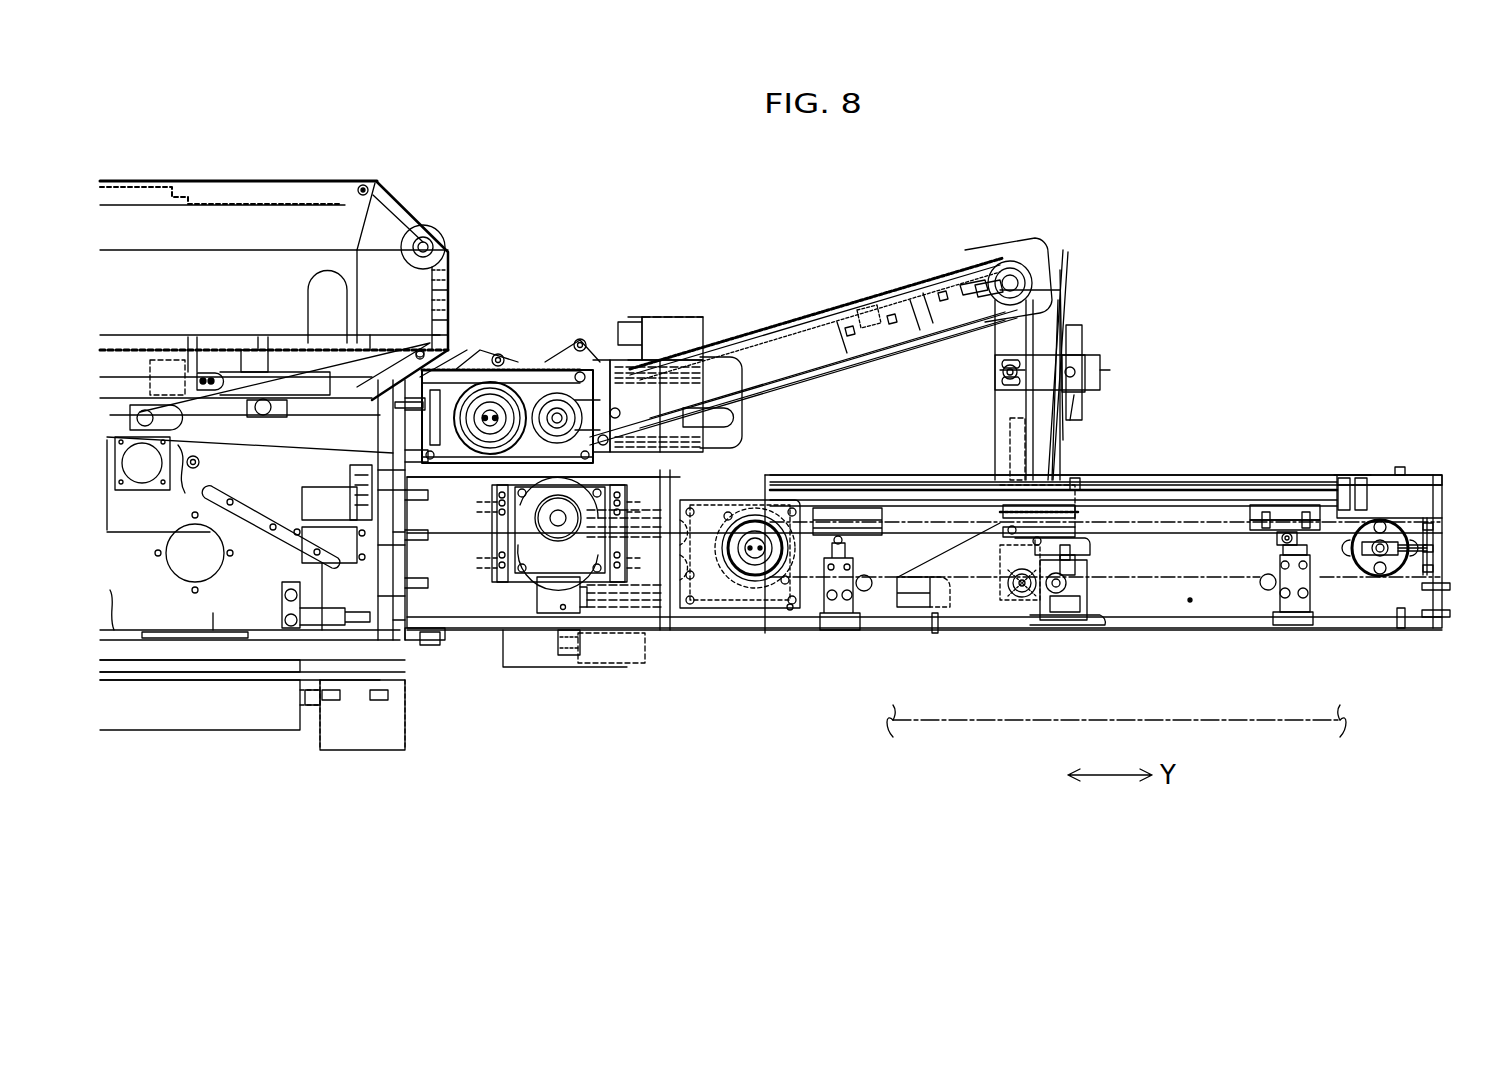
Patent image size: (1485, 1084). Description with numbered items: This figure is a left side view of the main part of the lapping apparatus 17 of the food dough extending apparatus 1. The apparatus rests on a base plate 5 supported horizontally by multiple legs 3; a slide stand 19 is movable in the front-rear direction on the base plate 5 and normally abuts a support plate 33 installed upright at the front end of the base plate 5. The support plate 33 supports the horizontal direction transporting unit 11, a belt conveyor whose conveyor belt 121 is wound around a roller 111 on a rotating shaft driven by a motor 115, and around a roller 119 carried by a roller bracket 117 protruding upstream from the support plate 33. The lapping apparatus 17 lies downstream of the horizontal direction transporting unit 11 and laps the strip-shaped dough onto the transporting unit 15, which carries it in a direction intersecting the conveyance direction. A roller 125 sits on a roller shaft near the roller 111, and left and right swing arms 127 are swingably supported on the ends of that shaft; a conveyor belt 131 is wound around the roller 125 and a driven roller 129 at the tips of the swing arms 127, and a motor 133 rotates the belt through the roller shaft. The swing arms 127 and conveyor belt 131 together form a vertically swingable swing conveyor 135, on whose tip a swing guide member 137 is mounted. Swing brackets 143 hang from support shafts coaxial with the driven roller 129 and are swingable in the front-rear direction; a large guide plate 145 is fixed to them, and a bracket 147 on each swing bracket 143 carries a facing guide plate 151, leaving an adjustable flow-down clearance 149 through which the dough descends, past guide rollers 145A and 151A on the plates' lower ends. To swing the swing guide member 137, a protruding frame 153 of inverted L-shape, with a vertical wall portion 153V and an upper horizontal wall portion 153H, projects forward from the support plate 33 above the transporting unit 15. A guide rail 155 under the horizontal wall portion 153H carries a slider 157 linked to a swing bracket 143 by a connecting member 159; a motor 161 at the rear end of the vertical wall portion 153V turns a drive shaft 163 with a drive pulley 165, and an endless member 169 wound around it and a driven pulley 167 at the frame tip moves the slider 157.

The food dough extending apparatus 1 is at (422, 164).
The legs 3 is at (366, 740).
The base plate 5 is at (268, 696).
The horizontal direction transporting unit 11 is at (262, 462).
The transporting unit 15 is at (1298, 718).
The lapping apparatus 17 is at (825, 316).
The slide stand 19 is at (194, 682).
The support plate 33 is at (412, 655).
The roller 111 is at (478, 352).
The motor 115 is at (750, 423).
The roller bracket 117 is at (181, 448).
The roller 119 is at (175, 385).
The conveyor belt 121 is at (308, 447).
The roller 125 is at (540, 352).
The swing arms 127 is at (778, 335).
The driven roller 129 is at (1025, 245).
The conveyor belt 131 is at (818, 312).
The motor 133 is at (525, 584).
The swing conveyor 135 is at (860, 366).
The swing guide member 137 is at (1088, 318).
The swing brackets 143 is at (1002, 408).
The guide plate 145 is at (1055, 413).
The guide roller 145A is at (1005, 598).
The bracket 147 is at (1075, 368).
The flow-down clearance 149 is at (1050, 310).
The guide plate 151 is at (1070, 255).
The guide roller 151A is at (1048, 626).
The protruding frame 153 is at (1436, 464).
The horizontal wall portion 153H is at (1292, 475).
The vertical wall portion 153V is at (1233, 618).
The guide rail 155 is at (1215, 490).
The slider 157 is at (1080, 503).
The connecting member 159 is at (1000, 498).
The motor 161 is at (665, 620).
The drive shaft 163 is at (760, 561).
The drive pulley 165 is at (733, 581).
The driven pulley 167 is at (1380, 576).
The endless member 169 is at (1132, 583).